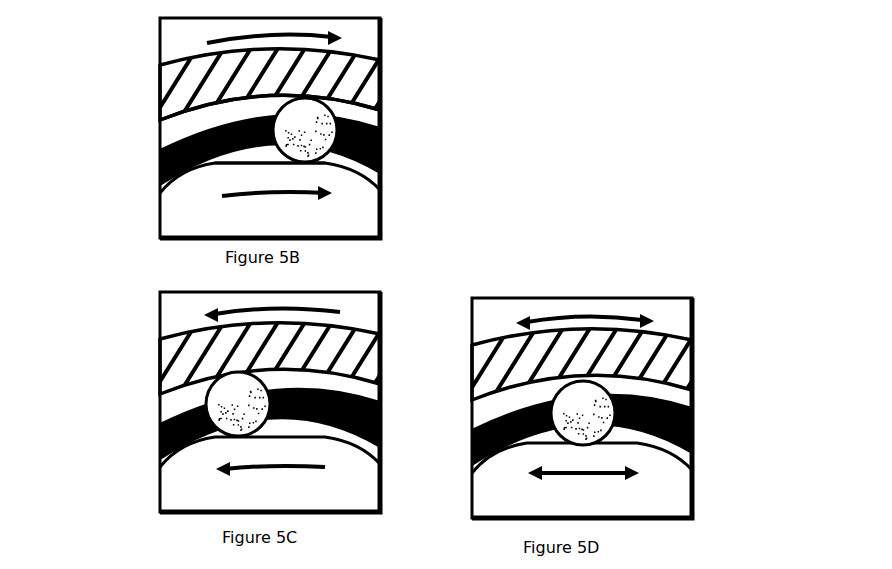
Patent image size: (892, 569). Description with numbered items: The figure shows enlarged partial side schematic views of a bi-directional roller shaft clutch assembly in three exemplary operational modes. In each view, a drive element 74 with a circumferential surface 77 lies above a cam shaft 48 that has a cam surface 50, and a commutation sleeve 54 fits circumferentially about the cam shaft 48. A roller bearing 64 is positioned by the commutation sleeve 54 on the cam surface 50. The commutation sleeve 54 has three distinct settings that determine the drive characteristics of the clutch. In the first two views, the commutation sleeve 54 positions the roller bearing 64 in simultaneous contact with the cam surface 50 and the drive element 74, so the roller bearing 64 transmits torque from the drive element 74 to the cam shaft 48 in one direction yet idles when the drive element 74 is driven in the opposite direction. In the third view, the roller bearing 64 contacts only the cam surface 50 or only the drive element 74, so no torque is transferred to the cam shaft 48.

In FIG. 5B, the cam shaft 48 is at (198, 203).
In FIG. 5C, the cam shaft 48 is at (198, 480).
In FIG. 5D, the cam shaft 48 is at (650, 493).
In FIG. 5B, the cam surface 50 is at (250, 163).
In FIG. 5B, the commutation sleeve 54 is at (383, 155).
In FIG. 5C, the commutation sleeve 54 is at (385, 434).
In FIG. 5D, the commutation sleeve 54 is at (495, 422).
In FIG. 5B, the roller bearing 64 is at (290, 117).
In FIG. 5C, the roller bearing 64 is at (232, 407).
In FIG. 5D, the roller bearing 64 is at (587, 408).
In FIG. 5B, the drive element 74 is at (383, 83).
In FIG. 5C, the drive element 74 is at (197, 348).
In FIG. 5D, the drive element 74 is at (650, 357).
In FIG. 5B, the circumferential surface 77 is at (383, 118).